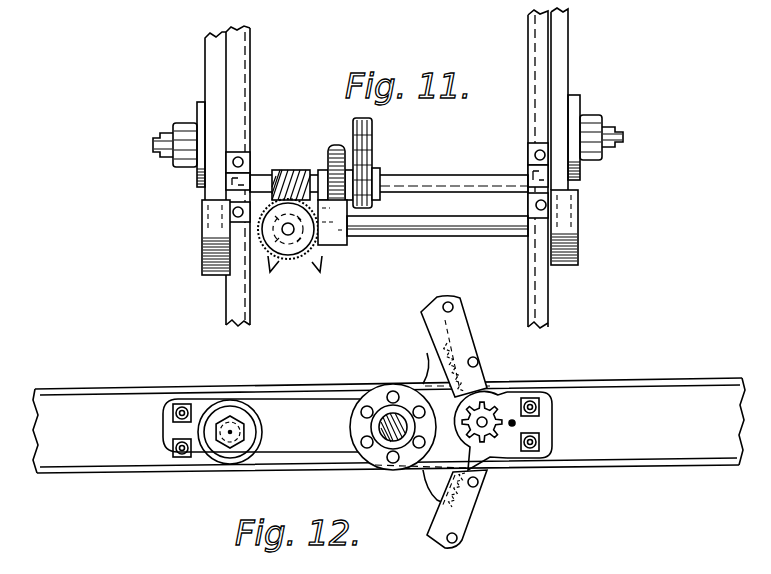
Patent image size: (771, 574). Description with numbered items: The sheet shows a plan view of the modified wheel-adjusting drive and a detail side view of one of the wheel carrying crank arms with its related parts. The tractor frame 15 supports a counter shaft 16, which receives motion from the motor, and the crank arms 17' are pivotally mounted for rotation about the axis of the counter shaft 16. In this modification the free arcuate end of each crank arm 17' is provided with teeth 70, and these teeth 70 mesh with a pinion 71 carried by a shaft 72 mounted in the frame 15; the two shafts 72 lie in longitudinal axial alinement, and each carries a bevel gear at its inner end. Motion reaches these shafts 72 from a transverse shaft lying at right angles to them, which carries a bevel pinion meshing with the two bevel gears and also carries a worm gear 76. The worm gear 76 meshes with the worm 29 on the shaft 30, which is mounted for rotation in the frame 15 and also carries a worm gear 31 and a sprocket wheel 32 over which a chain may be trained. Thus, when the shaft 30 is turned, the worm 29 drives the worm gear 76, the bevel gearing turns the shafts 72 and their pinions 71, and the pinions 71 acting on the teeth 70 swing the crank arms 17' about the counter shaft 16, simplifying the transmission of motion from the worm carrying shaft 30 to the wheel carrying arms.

In FIG. 11, the tractor frame 15 is at (240, 75).
In FIG. 12, the tractor frame 15 is at (670, 365).
In FIG. 11, the counter shaft 16 is at (161, 146).
In FIG. 12, the crank arm 17' is at (261, 431).
In FIG. 11, the worm 29 is at (283, 170).
In FIG. 11, the shaft 30 is at (447, 167).
In FIG. 11, the worm gear 31 is at (333, 145).
In FIG. 11, the sprocket wheel 32 is at (373, 132).
In FIG. 12, the teeth 70 is at (477, 407).
In FIG. 11, the pinion 71 is at (230, 212).
In FIG. 12, the pinion 71 is at (486, 418).
In FIG. 11, the shaft 72 is at (463, 237).
In FIG. 12, the shaft 72 is at (520, 423).
In FIG. 11, the worm gear 76 is at (293, 250).